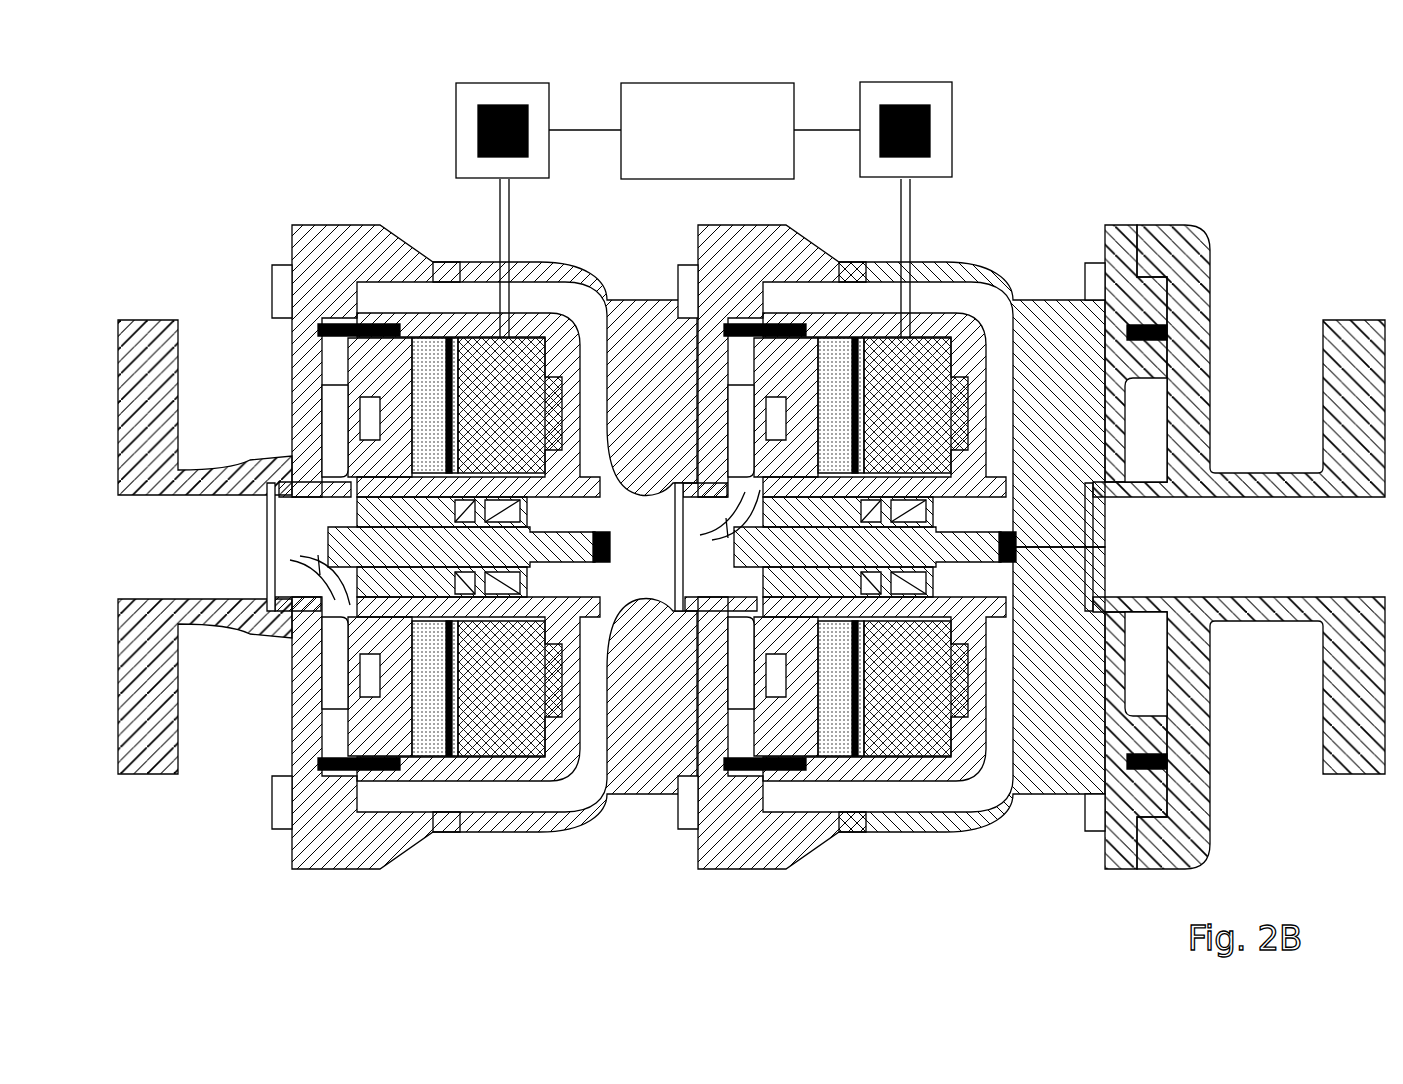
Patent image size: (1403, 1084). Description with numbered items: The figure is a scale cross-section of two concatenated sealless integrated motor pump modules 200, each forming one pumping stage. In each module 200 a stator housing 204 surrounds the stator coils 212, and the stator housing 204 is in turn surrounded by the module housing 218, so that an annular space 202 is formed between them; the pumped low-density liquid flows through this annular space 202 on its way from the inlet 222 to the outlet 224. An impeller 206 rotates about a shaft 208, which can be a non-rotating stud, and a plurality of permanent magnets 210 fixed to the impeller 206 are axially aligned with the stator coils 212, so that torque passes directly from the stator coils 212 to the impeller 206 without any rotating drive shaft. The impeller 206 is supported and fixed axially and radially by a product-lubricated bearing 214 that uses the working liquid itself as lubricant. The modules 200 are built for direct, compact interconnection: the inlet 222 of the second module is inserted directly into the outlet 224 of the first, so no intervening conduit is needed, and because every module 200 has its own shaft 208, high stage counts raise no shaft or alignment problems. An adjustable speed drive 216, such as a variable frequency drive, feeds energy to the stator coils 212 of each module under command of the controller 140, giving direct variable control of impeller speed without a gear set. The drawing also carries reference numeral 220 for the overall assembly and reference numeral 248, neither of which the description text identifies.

The controller 140 is at (684, 143).
The IMP module 200 is at (530, 258).
The annular space 202 is at (406, 313).
The stator housing 204 is at (985, 760).
The impeller 206 is at (365, 440).
The shaft 208 is at (386, 561).
The permanent magnets 210 is at (872, 735).
The stator coils 212 is at (484, 423).
The product-lubricated bearing 214 is at (348, 575).
The adjustable speed drive 216 is at (456, 132).
The module housing 218 is at (626, 346).
The pump system 220 is at (280, 128).
The inlet 222 is at (151, 553).
The outlet 224 is at (281, 527).
The mounting plate 248 is at (715, 870).